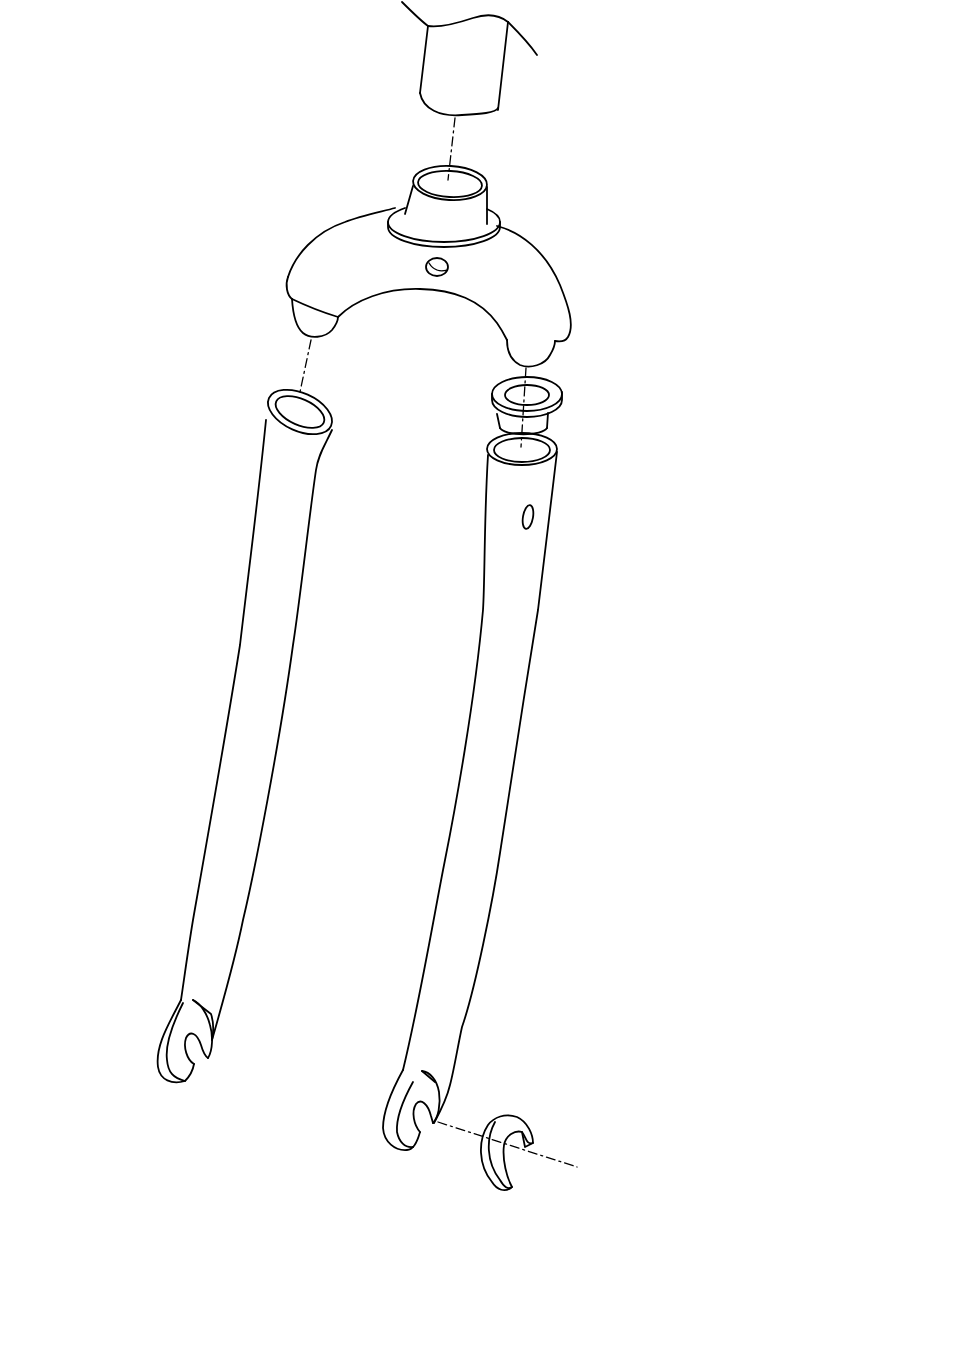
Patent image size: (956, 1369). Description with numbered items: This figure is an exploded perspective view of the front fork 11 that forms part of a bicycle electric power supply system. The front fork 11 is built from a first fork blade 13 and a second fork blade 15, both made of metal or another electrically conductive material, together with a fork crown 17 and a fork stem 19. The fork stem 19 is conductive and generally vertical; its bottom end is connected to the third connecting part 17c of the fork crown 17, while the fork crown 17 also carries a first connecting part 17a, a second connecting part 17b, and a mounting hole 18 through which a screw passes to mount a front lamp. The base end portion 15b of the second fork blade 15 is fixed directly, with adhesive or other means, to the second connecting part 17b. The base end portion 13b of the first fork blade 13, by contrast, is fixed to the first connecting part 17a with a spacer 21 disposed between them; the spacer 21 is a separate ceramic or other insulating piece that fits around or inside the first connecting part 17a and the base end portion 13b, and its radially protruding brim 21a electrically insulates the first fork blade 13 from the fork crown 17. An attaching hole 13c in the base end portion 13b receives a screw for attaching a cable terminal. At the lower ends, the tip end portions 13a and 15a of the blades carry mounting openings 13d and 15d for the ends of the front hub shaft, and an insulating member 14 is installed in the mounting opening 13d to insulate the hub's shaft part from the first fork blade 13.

The front fork 11 is at (557, 770).
The first fork blade 13 is at (512, 658).
The tip end portion of the first fork blade 13a is at (445, 1077).
The base end portion of the first fork blade 13b is at (538, 478).
The attaching hole 13c is at (535, 517).
The mounting opening 13d is at (417, 1134).
The insulating member 14 is at (530, 1128).
The second fork blade 15 is at (250, 628).
The tip end portion of the second fork blade 15a is at (173, 1010).
The base end portion of the second fork blade 15b is at (273, 442).
The mounting opening 15d is at (185, 1065).
The fork crown 17 is at (527, 278).
The first connecting part 17a is at (543, 352).
The second connecting part 17b is at (300, 315).
The third connecting part 17c is at (473, 210).
The mounting hole 18 is at (427, 272).
The fork stem 19 is at (445, 57).
The spacer 21 is at (567, 382).
The brim 21a is at (547, 412).